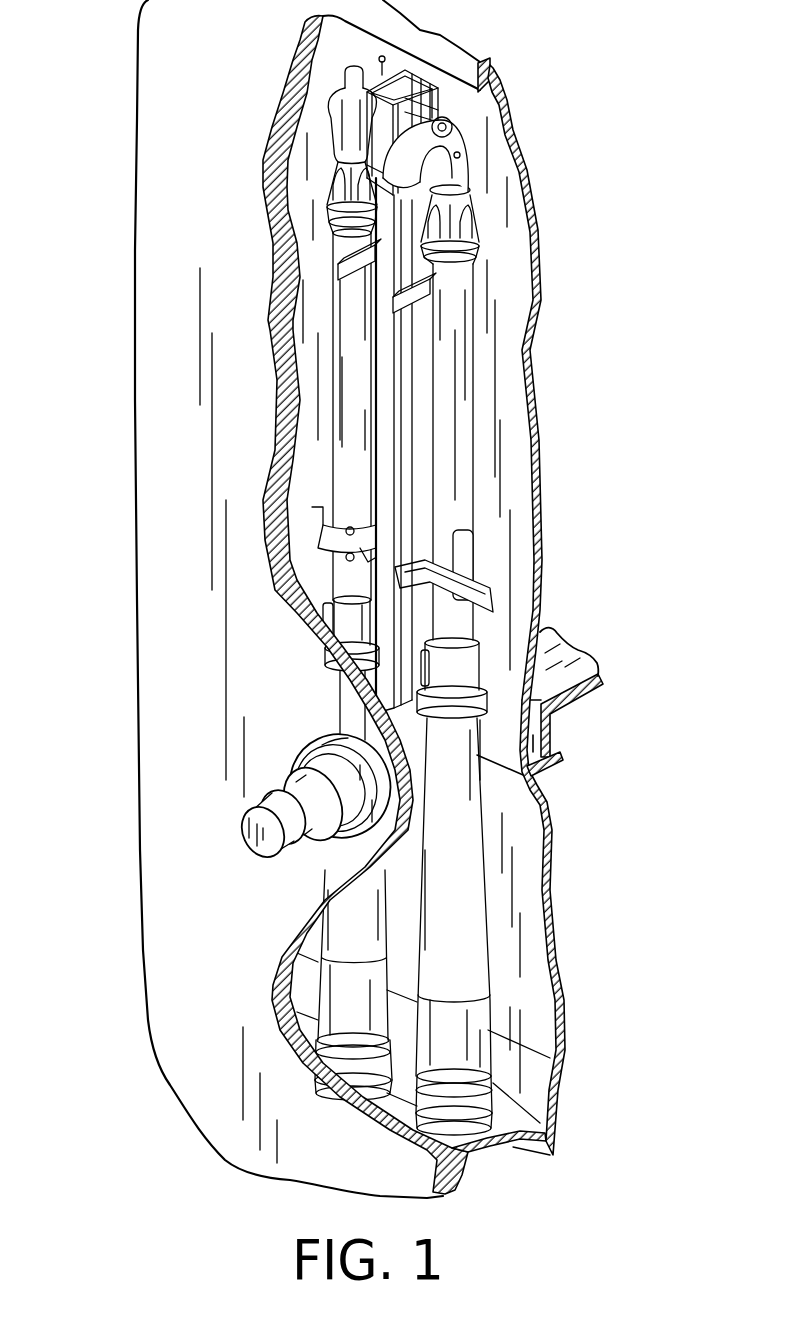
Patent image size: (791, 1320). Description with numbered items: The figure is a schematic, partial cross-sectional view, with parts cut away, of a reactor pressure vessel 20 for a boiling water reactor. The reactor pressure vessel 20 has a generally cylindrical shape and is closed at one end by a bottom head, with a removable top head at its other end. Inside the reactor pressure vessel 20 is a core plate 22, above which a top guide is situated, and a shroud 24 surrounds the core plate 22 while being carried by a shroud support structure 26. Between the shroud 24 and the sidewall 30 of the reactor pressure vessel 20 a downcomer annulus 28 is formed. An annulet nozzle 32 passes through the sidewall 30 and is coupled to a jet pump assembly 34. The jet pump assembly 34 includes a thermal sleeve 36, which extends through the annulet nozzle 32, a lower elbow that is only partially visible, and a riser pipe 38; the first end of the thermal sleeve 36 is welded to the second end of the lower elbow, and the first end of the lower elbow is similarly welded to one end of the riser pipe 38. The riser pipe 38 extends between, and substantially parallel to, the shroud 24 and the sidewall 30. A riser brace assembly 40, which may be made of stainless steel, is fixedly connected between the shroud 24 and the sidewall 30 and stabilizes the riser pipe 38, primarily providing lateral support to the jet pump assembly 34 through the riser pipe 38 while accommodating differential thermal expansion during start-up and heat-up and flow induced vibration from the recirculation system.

The reactor pressure vessel 20 is at (147, 1026).
The core plate 22 is at (582, 660).
The shroud 24 is at (522, 567).
The shroud support structure 26 is at (563, 1088).
The downcomer annulus 28 is at (508, 362).
The sidewall 30 is at (275, 980).
The annulet nozzle 32 is at (290, 766).
The jet pump assembly 34 is at (316, 455).
The thermal sleeve 36 is at (243, 830).
The riser pipe 38 is at (372, 392).
The riser brace assembly 40 is at (345, 273).